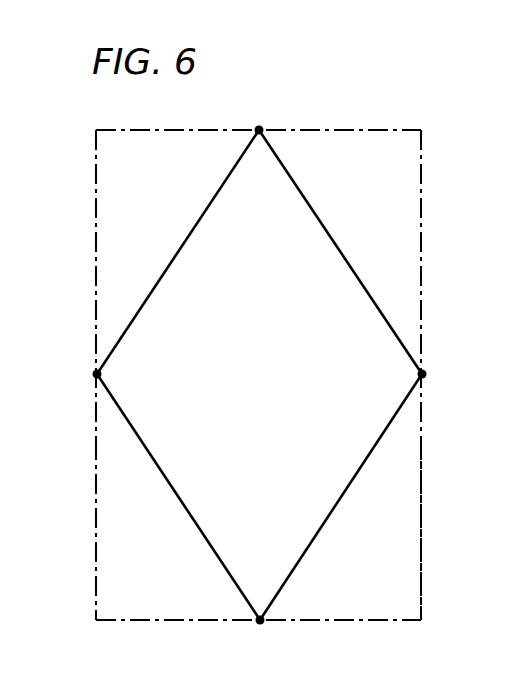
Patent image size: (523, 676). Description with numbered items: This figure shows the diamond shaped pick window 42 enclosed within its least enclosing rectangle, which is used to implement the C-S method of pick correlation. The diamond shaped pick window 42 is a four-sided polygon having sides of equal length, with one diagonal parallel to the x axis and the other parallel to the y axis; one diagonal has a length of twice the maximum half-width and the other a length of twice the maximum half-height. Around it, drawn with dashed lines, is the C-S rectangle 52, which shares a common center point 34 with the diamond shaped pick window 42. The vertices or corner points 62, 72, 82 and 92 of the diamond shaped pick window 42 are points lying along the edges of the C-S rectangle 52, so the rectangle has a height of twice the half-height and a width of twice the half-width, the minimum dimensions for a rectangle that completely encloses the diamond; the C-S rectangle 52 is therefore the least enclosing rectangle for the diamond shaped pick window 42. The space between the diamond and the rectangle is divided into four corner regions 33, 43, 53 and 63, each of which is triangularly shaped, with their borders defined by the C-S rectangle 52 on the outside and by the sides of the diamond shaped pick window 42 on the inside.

The center point 34 is at (258, 375).
The diamond shaped pick window 42 is at (201, 266).
The C-S rectangle 52 is at (368, 149).
The vertex 62 is at (260, 130).
The vertex 72 is at (424, 371).
The vertex 82 is at (262, 622).
The vertex 92 is at (95, 378).
The corner region 33 is at (412, 240).
The corner region 43 is at (412, 538).
The corner region 53 is at (107, 565).
The corner region 63 is at (106, 210).